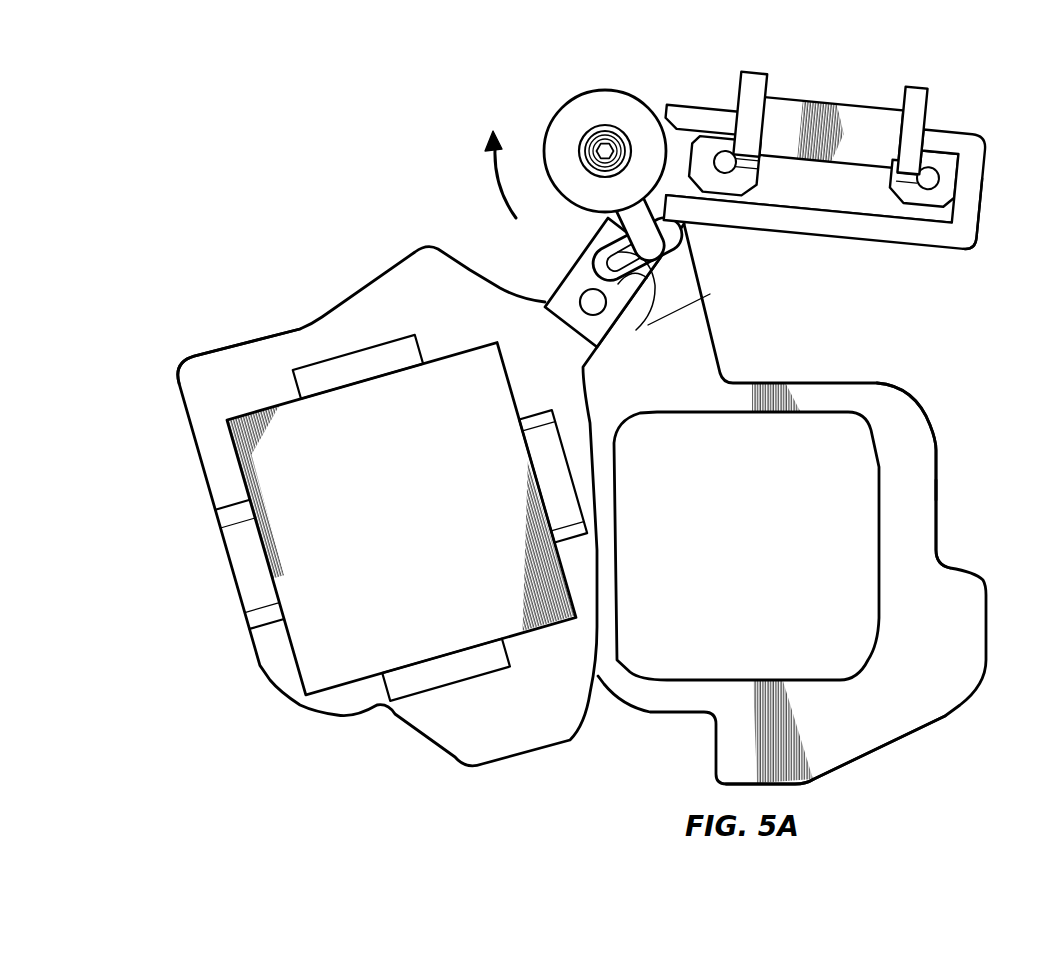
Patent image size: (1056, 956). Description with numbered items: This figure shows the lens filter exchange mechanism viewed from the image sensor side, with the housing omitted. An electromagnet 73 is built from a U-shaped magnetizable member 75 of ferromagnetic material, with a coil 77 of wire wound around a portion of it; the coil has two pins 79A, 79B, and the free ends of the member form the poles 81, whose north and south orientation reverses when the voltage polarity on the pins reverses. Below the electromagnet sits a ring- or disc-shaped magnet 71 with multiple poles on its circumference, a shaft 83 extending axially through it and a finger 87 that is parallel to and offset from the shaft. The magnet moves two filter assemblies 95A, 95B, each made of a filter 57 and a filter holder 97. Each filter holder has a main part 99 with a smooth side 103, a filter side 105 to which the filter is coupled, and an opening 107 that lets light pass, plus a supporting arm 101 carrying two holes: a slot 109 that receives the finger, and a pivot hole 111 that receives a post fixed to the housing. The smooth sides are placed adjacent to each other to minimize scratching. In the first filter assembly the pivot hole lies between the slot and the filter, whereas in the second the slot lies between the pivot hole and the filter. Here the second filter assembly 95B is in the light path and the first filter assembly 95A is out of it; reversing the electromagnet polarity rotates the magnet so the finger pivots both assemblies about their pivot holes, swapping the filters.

The magnet 71 is at (607, 90).
The shaft 83 is at (578, 150).
The poles 81 is at (680, 112).
The coil 77 is at (858, 112).
The electromagnet 73 is at (947, 137).
The pin 79A is at (743, 172).
The pin 79B is at (907, 175).
The U-shaped magnetizable member 75 is at (977, 197).
The finger 87 is at (675, 256).
The pivot hole 111 is at (590, 296).
The supporting arm 101 is at (565, 292).
The slot 109 is at (636, 330).
The filter side 105 is at (247, 375).
The filter holder 97 is at (218, 463).
The filter 57 is at (258, 548).
The main part 99 is at (910, 517).
The first filter assembly 95A is at (503, 777).
The second filter assembly 95B is at (668, 735).
The opening 107 is at (875, 577).
The smooth side 103 is at (838, 721).